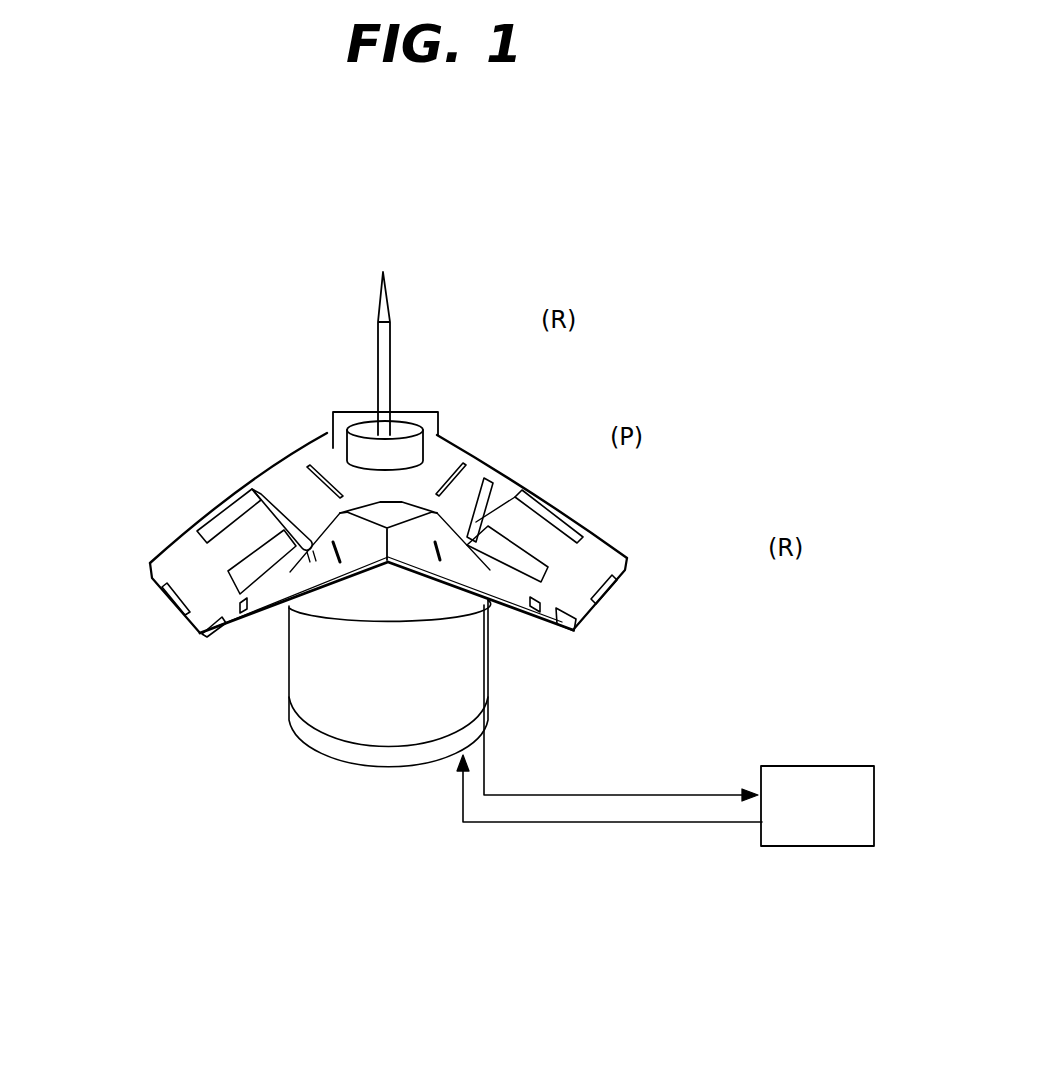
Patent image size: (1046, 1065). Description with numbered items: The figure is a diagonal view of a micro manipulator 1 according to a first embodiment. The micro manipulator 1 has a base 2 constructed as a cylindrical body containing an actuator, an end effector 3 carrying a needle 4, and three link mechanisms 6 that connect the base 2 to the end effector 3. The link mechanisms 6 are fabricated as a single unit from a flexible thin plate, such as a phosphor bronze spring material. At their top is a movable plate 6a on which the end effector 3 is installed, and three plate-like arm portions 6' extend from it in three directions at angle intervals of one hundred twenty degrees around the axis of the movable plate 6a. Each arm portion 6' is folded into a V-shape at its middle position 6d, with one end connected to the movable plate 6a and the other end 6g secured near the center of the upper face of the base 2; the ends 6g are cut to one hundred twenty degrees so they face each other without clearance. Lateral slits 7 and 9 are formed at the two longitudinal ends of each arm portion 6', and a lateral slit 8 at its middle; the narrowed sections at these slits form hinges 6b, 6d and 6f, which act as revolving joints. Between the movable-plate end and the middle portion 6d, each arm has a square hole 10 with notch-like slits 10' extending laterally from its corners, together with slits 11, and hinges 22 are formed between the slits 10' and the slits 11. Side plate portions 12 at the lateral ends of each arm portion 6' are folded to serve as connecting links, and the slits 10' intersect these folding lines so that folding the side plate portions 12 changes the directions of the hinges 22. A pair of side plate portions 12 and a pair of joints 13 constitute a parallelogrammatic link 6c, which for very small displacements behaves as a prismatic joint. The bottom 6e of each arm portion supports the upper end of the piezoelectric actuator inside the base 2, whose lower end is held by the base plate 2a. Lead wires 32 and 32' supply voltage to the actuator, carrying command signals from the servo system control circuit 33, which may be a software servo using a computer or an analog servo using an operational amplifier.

The micro manipulator 1 is at (473, 283).
The base 2 is at (335, 712).
The base plate 2a is at (360, 767).
The end effector 3 is at (407, 422).
The needle 4 is at (376, 330).
The link mechanisms 6 is at (632, 453).
The arm portion 6' is at (381, 499).
The movable plate 6a is at (334, 435).
The hinge 6b is at (300, 455).
The parallelogrammatic link 6c is at (550, 513).
The middle position 6d is at (627, 565).
The bottom 6e is at (508, 615).
The hinge 6f is at (462, 610).
The end of arm portion 6g is at (388, 562).
The lateral slit 7 is at (335, 453).
The lateral slit 8 is at (180, 605).
The lateral slit 9 is at (440, 540).
The square hole 10 is at (402, 500).
The notch-like slit 10' is at (627, 501).
The slit 11 is at (556, 612).
The side plate portion 12 is at (250, 612).
The joint 13 is at (287, 487).
The hinge 22 is at (470, 525).
The lead wire 32 is at (621, 703).
The lead wire 32' is at (609, 841).
The servo system control circuit 33 is at (790, 846).